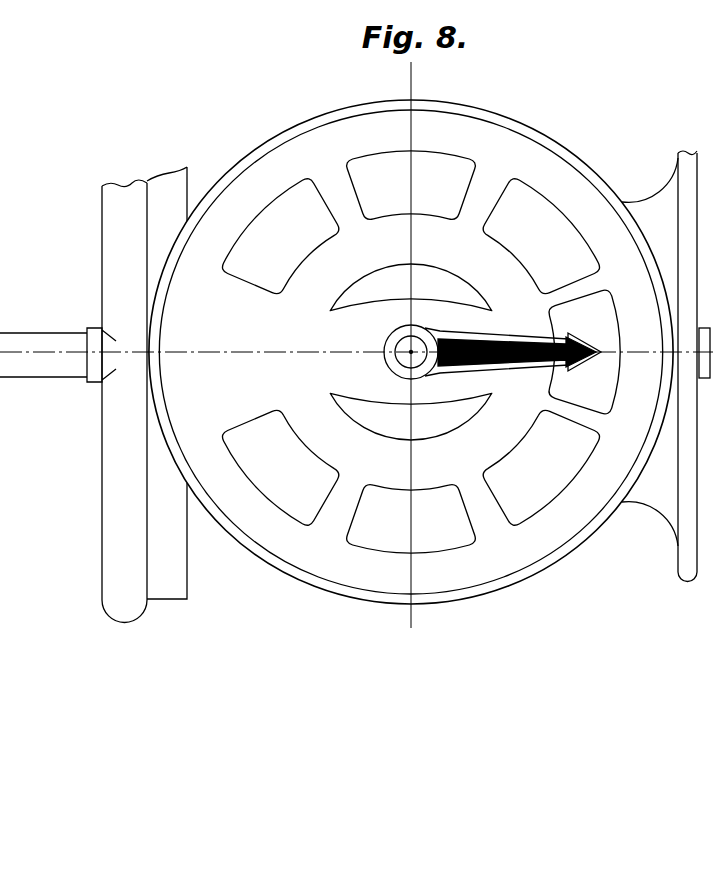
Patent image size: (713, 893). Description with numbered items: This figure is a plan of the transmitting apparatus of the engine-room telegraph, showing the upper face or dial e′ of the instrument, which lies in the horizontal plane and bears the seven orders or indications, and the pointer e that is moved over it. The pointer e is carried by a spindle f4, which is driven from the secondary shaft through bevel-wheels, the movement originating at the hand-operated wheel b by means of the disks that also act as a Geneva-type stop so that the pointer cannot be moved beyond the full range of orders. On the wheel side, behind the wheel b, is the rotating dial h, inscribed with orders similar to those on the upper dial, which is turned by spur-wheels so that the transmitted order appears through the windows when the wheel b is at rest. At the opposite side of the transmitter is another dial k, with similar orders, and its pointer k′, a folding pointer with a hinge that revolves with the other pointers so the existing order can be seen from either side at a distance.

The hand-operated wheel b is at (103, 226).
The rotating dial h is at (188, 174).
The upper face or dial e′ is at (187, 413).
The pointer e is at (553, 346).
The spindle f4 is at (408, 351).
The dial k is at (683, 154).
The pointer k′ is at (705, 339).